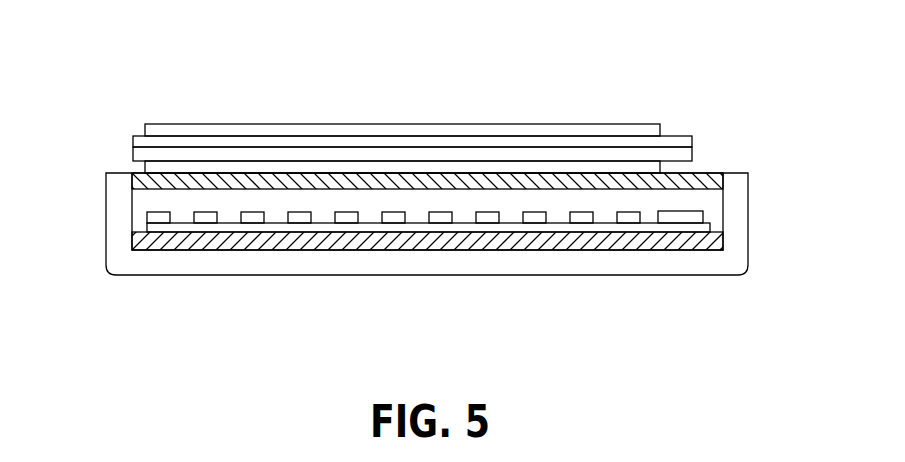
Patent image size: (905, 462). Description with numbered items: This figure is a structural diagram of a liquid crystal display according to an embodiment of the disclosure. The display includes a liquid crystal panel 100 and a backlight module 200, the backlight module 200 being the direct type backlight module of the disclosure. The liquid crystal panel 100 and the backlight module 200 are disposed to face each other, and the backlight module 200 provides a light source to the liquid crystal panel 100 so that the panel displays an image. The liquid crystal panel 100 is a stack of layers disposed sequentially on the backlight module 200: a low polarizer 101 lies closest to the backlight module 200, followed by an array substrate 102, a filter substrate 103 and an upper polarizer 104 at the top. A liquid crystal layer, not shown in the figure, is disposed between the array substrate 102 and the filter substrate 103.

The liquid crystal panel 100 is at (429, 115).
The low polarizer 101 is at (165, 166).
The array substrate 102 is at (134, 150).
The filter substrate 103 is at (136, 137).
The upper polarizer 104 is at (205, 126).
The backlight module 200 is at (757, 175).